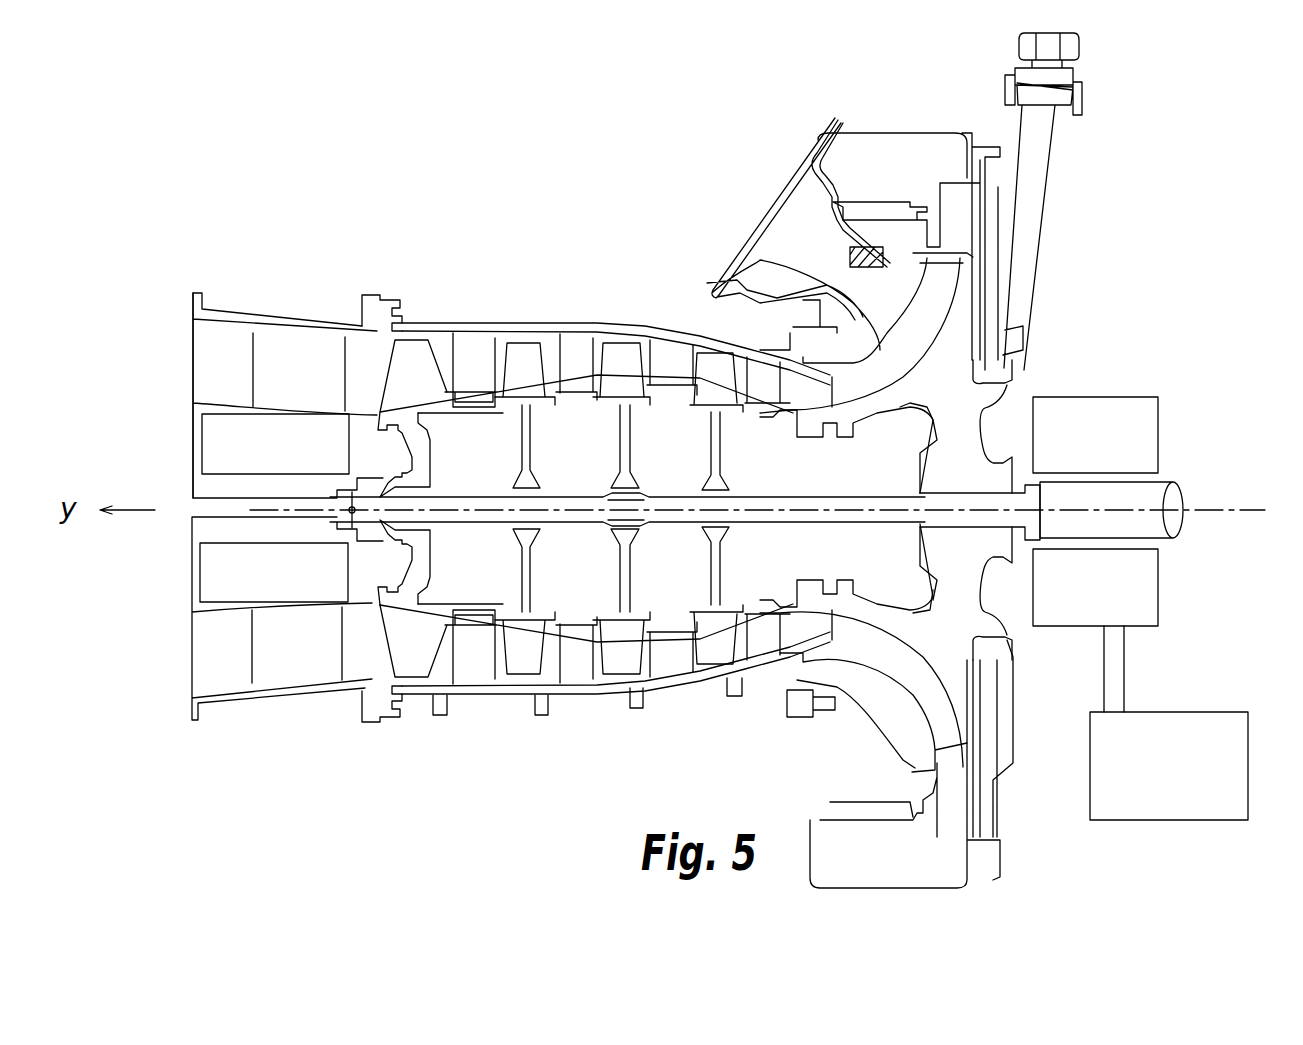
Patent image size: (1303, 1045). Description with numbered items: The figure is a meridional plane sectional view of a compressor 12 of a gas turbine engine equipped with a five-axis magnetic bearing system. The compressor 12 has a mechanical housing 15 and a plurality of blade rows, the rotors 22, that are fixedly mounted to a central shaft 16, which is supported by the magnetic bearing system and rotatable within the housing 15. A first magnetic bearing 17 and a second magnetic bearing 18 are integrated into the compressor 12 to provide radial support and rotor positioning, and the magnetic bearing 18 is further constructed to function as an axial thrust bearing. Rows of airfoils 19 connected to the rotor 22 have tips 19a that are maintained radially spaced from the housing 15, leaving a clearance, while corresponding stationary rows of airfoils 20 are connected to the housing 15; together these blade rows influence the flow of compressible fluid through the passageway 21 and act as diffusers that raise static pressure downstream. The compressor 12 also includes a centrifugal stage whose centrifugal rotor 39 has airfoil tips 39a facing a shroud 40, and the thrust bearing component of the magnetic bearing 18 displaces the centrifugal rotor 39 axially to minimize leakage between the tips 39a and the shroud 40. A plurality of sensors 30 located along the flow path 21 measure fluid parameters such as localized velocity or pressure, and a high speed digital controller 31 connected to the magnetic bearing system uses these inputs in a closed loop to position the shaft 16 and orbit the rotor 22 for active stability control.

The compressor 12 is at (561, 217).
The mechanical housing 15 is at (623, 333).
The central shaft 16 is at (1173, 527).
The first magnetic bearing 17 is at (210, 588).
The second magnetic bearing 18 is at (1143, 395).
The airfoils 19 is at (416, 390).
The tip 19a is at (403, 340).
The stationary airfoils 20 is at (492, 340).
The passageway 21 is at (368, 348).
The rotor 22 is at (397, 600).
The sensors 30 is at (440, 715).
The high speed digital controller 31 is at (1248, 727).
The centrifugal rotor 39 is at (917, 350).
The tips 39a is at (758, 280).
The shroud 40 is at (860, 222).